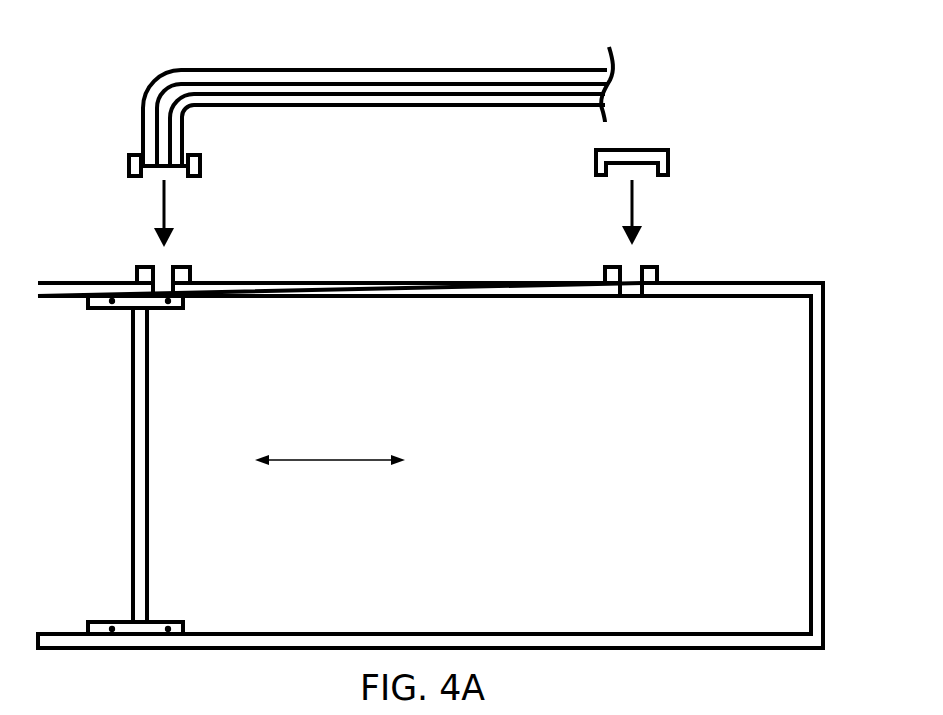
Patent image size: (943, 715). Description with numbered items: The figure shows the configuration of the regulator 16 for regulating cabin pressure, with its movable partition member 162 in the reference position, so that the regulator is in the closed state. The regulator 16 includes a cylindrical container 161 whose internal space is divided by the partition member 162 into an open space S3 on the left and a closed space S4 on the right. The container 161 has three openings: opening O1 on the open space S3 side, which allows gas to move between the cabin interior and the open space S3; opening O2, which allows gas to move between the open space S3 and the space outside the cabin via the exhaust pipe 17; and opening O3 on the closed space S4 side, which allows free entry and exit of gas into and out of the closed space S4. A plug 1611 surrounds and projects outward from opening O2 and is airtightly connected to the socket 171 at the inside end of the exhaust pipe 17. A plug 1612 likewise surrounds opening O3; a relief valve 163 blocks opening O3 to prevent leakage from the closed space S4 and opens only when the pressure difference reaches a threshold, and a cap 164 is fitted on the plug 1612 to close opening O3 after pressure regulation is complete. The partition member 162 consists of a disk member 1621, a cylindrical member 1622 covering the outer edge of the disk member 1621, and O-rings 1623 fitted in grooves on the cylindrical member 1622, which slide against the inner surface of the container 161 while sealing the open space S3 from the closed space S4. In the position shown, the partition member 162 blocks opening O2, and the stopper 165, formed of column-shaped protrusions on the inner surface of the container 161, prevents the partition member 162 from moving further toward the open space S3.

The regulator 16 is at (758, 84).
The exhaust pipe 17 is at (393, 69).
The socket 171 is at (127, 154).
The cap 164 is at (636, 148).
The container 161 is at (348, 270).
The plug 1611 is at (190, 264).
The plug 1612 is at (655, 265).
The relief valve 163 is at (630, 299).
The stopper 165 is at (85, 310).
The partition member 162 is at (184, 395).
The disk member 1621 is at (150, 364).
The cylindrical member 1622 is at (172, 620).
The O-ring 1623 is at (108, 620).
The opening O1 is at (33, 457).
The opening O2 is at (152, 258).
The opening O3 is at (620, 256).
The open space S3 is at (118, 472).
The closed space S4 is at (655, 473).